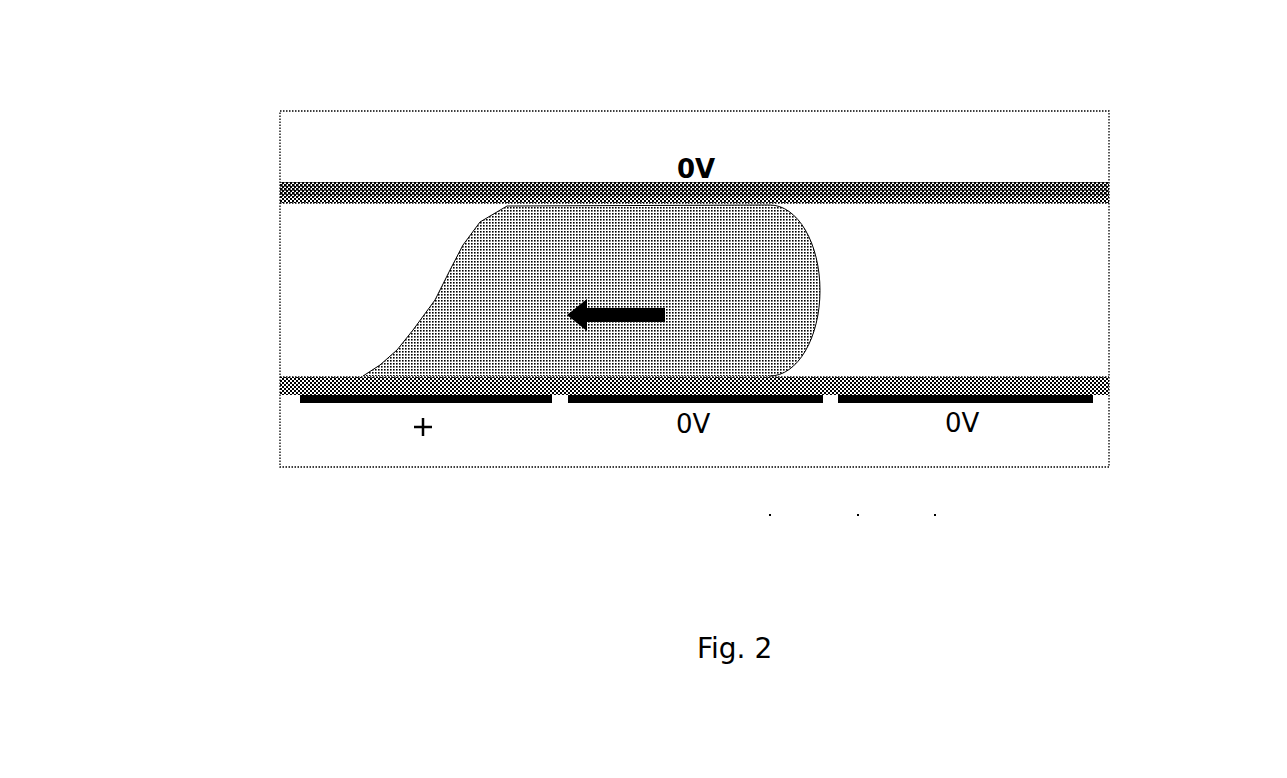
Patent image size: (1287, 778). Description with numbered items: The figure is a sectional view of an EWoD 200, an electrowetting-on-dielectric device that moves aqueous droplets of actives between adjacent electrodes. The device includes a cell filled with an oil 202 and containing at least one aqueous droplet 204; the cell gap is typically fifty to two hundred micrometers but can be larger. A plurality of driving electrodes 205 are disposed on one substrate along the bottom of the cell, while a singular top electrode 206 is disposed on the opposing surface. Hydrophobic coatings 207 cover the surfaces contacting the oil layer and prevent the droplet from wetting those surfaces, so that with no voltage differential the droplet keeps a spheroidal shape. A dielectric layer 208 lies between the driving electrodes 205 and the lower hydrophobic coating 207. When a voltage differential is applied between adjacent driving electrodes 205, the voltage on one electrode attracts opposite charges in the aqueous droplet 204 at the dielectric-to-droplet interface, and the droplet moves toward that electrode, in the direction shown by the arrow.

The EWoD 200 is at (246, 114).
The oil 202 is at (1000, 303).
The aqueous droplet 204 is at (760, 341).
The driving electrodes 205 is at (1057, 403).
The top electrode 206 is at (1063, 183).
The hydrophobic coatings 207 is at (1109, 200).
The dielectric layer 208 is at (1093, 395).